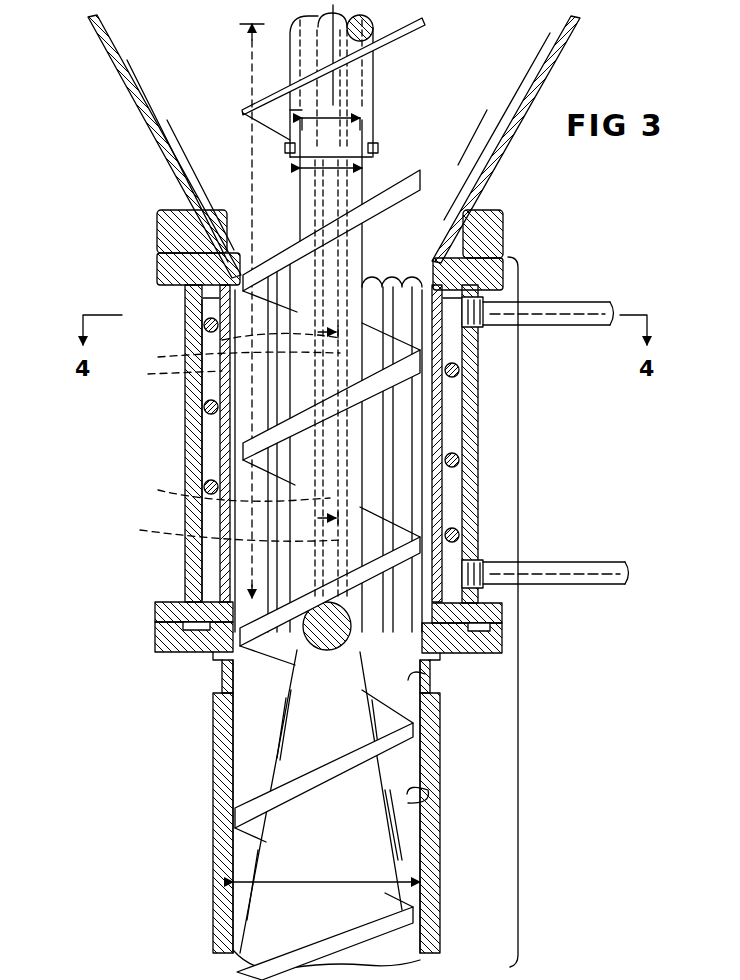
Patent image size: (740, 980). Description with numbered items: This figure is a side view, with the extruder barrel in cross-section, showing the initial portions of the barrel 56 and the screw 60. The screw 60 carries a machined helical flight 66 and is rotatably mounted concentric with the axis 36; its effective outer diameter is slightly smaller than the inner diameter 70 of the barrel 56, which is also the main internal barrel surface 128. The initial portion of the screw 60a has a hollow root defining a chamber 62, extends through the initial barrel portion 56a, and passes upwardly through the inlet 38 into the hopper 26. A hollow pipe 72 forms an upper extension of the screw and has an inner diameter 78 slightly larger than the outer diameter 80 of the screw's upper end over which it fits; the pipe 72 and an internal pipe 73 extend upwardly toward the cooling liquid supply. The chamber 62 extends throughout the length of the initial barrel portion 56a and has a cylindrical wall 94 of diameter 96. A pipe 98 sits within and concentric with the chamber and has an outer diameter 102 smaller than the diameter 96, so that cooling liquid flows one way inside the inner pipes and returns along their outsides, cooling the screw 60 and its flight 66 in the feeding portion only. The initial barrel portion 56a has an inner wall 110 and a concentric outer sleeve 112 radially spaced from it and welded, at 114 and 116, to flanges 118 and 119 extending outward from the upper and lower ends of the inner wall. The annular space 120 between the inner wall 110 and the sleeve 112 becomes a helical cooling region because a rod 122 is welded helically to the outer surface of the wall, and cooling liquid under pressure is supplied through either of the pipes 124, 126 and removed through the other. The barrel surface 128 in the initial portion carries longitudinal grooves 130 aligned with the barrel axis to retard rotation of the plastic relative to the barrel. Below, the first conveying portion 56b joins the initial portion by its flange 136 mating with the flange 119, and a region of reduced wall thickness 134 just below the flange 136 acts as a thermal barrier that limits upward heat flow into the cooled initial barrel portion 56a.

The hopper 26 is at (102, 60).
The axis 36 is at (290, 48).
The inlet 38 is at (203, 312).
The barrel 56 is at (193, 803).
The initial barrel portion 56a is at (518, 425).
The first conveying portion 56b is at (518, 767).
The screw 60 is at (236, 745).
The initial portion of the screw 60a is at (255, 82).
The chamber 62 is at (376, 28).
The helical flight 66 is at (240, 852).
The inner diameter 70 is at (440, 859).
The hollow pipe 72 is at (374, 82).
The internal pipe 73 is at (323, 34).
The inner diameter 78 is at (332, 117).
The outer diameter 80 is at (313, 170).
The cylindrical wall 94 is at (250, 640).
The diameter 96 is at (224, 530).
The pipe 98 is at (231, 358).
The outer diameter 102 is at (230, 355).
The inner wall 110 is at (200, 445).
The outer sleeve 112 is at (190, 422).
The weld 114 is at (183, 290).
The weld 116 is at (180, 599).
The flange 118 is at (157, 270).
The flange 119 is at (155, 612).
The annular space 120 is at (456, 428).
The rod 122 is at (205, 404).
The pipe 124 is at (588, 305).
The pipe 126 is at (588, 568).
The main internal barrel surface 128 is at (440, 678).
The grooves 130 is at (484, 322).
The region of reduced thickness 134 is at (210, 674).
The flange 136 is at (160, 648).